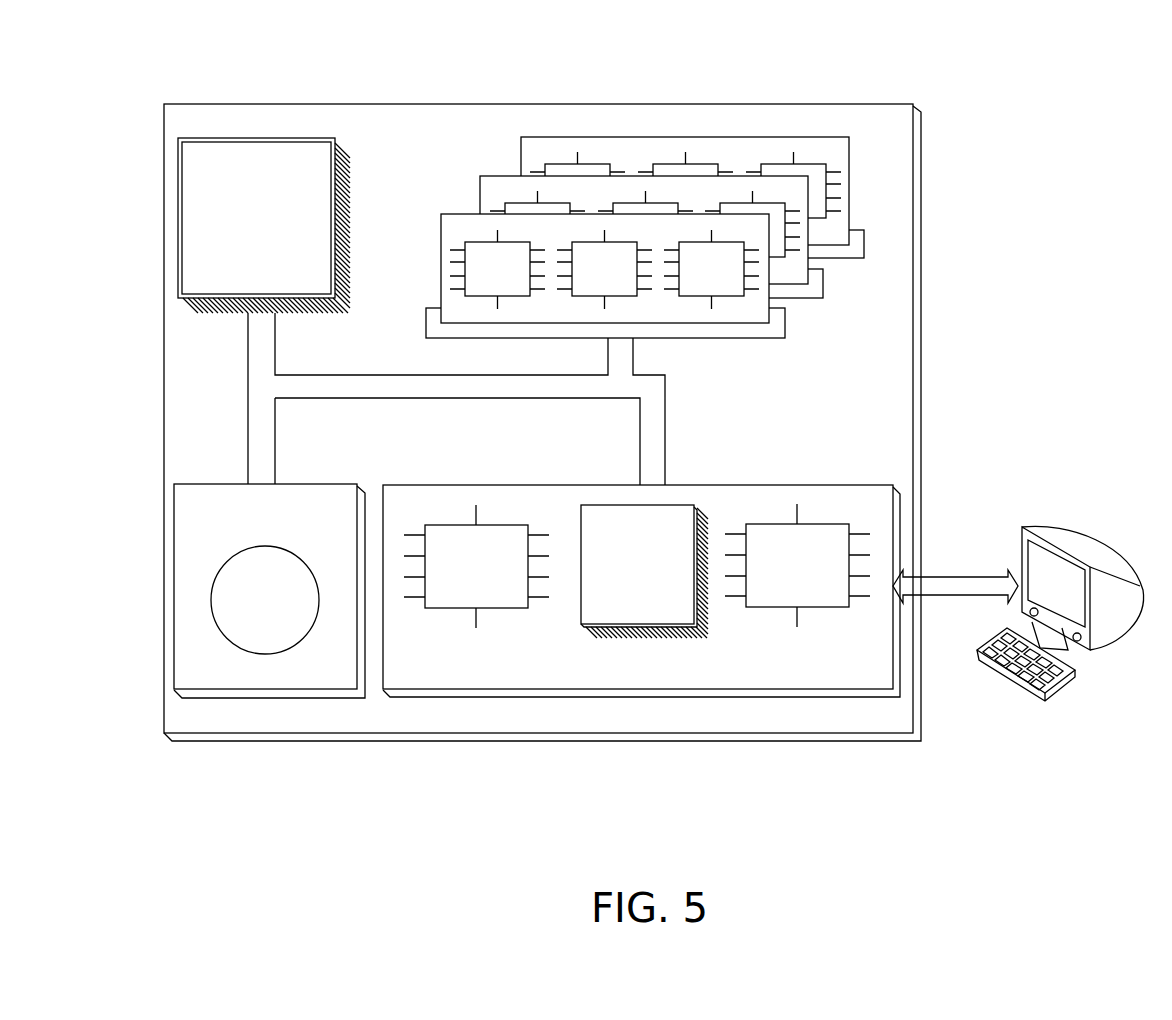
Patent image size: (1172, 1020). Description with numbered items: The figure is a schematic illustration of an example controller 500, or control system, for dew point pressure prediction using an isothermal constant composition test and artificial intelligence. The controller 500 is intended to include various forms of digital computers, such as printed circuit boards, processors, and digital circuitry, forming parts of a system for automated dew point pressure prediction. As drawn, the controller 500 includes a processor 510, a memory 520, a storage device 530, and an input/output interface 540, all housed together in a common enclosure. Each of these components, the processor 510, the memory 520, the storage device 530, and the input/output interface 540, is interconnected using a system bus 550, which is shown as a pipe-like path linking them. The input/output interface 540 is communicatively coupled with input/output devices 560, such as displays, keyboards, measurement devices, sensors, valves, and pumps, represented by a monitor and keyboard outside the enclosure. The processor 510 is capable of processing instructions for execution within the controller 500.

The controller 500 is at (878, 48).
The processor 510 is at (282, 262).
The memory 520 is at (827, 305).
The storage device 530 is at (343, 674).
The input/output interface 540 is at (780, 485).
The system bus 550 is at (433, 399).
The input/output devices 560 is at (1023, 527).